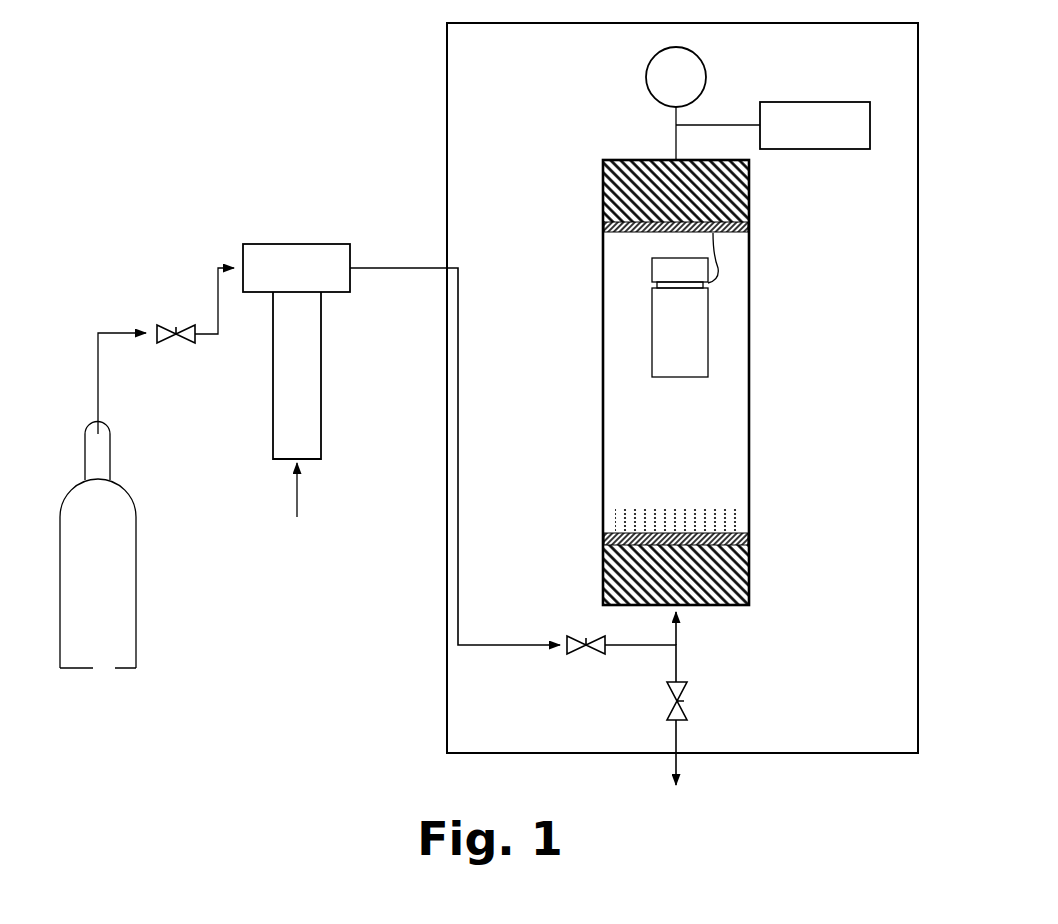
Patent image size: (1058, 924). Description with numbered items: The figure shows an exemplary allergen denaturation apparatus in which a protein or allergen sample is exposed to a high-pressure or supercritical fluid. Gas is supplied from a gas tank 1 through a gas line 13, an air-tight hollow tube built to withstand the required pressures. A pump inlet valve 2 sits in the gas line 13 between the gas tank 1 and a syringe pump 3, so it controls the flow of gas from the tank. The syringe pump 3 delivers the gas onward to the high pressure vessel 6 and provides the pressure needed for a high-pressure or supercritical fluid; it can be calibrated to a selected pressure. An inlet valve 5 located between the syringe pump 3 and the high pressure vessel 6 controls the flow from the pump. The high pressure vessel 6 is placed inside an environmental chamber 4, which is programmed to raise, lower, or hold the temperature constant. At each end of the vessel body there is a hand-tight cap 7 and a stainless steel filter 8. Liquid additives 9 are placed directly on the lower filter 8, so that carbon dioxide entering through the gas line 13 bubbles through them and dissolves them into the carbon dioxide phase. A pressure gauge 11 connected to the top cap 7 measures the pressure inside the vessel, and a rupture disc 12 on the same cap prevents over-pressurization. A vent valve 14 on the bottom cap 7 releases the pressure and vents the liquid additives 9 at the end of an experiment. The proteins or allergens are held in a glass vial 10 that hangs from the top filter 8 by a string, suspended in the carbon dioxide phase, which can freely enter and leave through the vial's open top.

The gas tank 1 is at (100, 670).
The pump inlet valve 2 is at (165, 322).
The syringe pump 3 is at (296, 398).
The environmental chamber 4 is at (444, 572).
The inlet valve 5 is at (582, 659).
The high pressure vessel 6 is at (600, 387).
The hand-tight cap 7 is at (752, 179).
The stainless steel filter 8 is at (752, 229).
The liquid additives 9 is at (745, 520).
The glass vial 10 is at (714, 334).
The pressure gauge 11 is at (644, 80).
The rupture disc 12 is at (792, 99).
The gas line 13 is at (102, 384).
The vent valve 14 is at (700, 704).